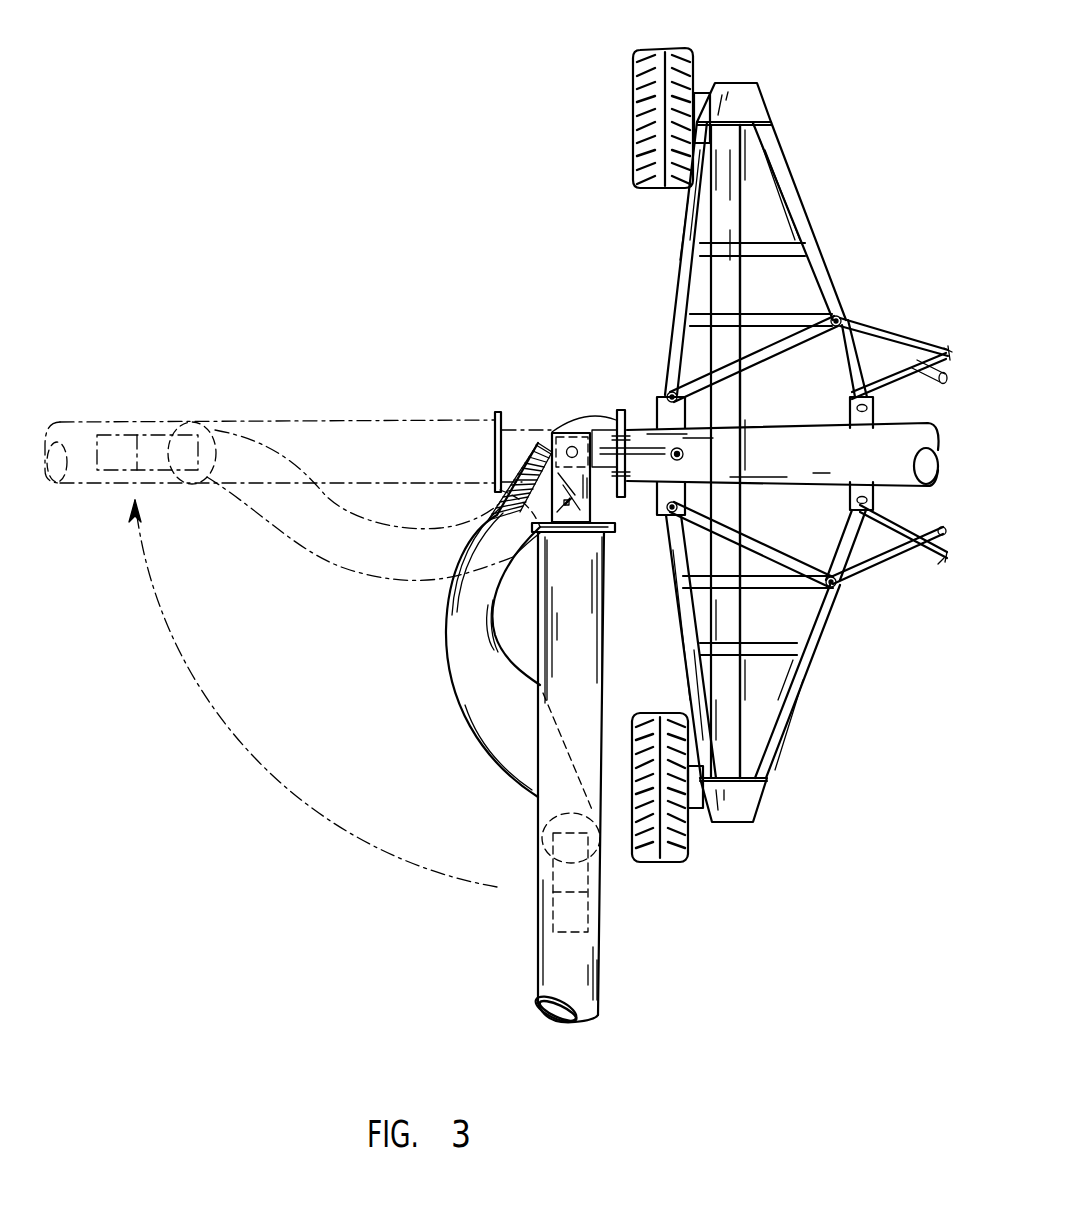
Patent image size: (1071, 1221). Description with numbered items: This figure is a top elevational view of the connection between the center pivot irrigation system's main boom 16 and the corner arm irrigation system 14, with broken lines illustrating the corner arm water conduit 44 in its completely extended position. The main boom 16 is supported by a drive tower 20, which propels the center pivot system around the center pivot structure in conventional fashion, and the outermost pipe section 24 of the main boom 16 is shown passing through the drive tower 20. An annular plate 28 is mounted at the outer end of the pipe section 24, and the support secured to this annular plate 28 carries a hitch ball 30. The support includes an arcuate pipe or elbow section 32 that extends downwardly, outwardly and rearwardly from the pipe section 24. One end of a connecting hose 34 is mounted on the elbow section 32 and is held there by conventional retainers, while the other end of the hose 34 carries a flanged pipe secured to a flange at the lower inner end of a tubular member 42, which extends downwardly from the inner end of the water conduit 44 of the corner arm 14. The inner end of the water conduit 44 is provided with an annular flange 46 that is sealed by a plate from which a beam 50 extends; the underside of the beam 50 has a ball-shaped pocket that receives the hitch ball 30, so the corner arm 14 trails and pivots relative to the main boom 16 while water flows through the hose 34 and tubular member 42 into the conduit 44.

The corner arm irrigation system 14 is at (518, 922).
The main arm or boom 16 is at (904, 340).
The drive tower 20 is at (790, 690).
The outermost pipe section 24 is at (853, 462).
The annular plate 28 is at (628, 428).
The hitch ball 30 is at (568, 432).
The arcuate pipe or elbow section 32 is at (488, 448).
The connecting hose 34 is at (477, 680).
The tubular member 42 is at (573, 878).
The water conduit 44 is at (352, 428).
The annular flange 46 is at (617, 534).
The beam 50 is at (588, 450).